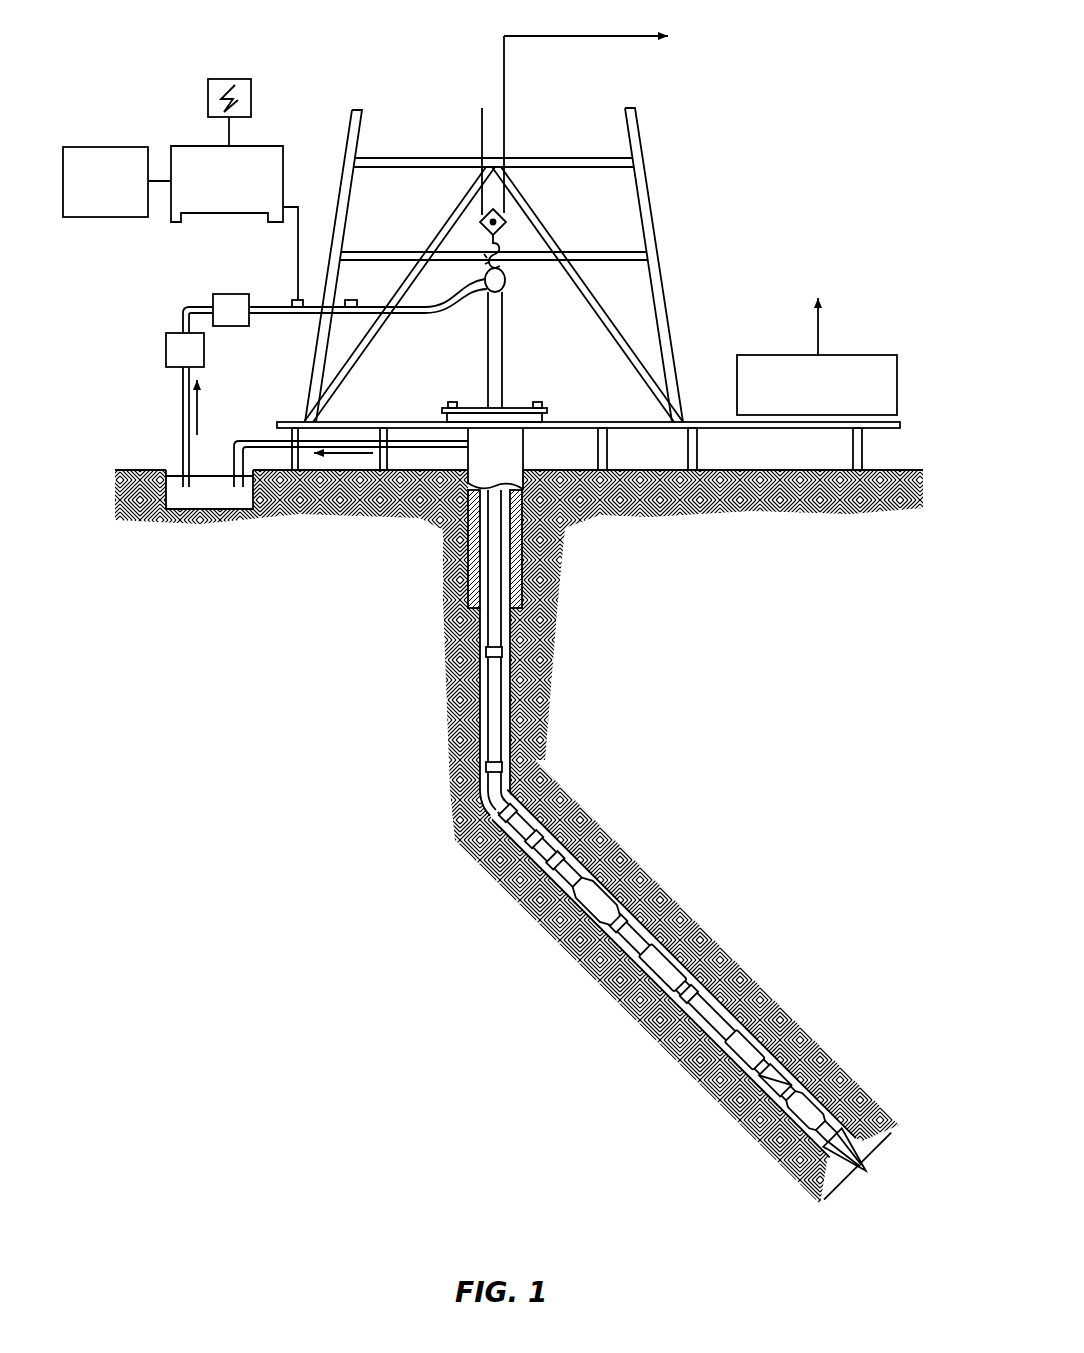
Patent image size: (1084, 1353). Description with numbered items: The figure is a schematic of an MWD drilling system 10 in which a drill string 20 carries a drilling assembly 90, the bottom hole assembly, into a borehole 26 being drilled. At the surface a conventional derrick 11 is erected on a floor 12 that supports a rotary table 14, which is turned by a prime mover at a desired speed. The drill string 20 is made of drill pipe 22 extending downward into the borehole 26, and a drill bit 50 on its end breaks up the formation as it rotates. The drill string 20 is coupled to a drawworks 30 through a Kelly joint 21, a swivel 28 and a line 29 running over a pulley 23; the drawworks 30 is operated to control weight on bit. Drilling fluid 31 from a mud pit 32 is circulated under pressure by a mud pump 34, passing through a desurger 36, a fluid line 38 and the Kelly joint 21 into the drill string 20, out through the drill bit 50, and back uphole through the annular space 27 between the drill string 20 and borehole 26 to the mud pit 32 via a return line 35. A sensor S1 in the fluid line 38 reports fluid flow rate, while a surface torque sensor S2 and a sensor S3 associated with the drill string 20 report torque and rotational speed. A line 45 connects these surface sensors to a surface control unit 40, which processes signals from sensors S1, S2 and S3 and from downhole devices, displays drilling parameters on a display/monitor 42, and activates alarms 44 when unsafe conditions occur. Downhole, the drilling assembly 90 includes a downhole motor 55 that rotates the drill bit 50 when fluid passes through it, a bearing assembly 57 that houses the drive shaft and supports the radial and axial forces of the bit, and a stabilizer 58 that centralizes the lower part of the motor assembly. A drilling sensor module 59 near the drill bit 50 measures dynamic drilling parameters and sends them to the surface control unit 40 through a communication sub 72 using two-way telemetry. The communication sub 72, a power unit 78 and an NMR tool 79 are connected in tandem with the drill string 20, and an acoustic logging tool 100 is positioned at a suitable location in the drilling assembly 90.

The MWD drilling system 10 is at (420, 43).
The derrick 11 is at (670, 268).
The floor 12 is at (686, 416).
The rotary table 14 is at (508, 404).
The drill string 20 is at (504, 705).
The Kelly joint 21 is at (503, 328).
The drill pipe 22 is at (471, 683).
The pulley 23 is at (500, 221).
The borehole 26 is at (518, 792).
The annular space 27 is at (537, 828).
The swivel 28 is at (486, 292).
The line 29 is at (506, 125).
The drawworks 30 is at (858, 355).
The drilling fluid 31 is at (176, 478).
The mud pit 32 is at (197, 508).
The mud pump 34 is at (180, 333).
The return line 35 is at (433, 448).
The desurger 36 is at (232, 294).
The fluid line 38 is at (181, 395).
The surface control unit 40 is at (208, 146).
The display/monitor 42 is at (229, 79).
The alarms 44 is at (113, 219).
The sensor line 45 is at (284, 207).
The sensor S1 is at (350, 300).
The surface torque sensor S2 is at (537, 402).
The sensor S3 is at (452, 402).
The drill bit 50 is at (853, 1127).
The downhole motor 55 is at (704, 984).
The bearing assembly 57 is at (830, 1082).
The stabilizer 58 is at (823, 1108).
The drilling sensor module 59 is at (790, 1150).
The communication sub 72 is at (485, 800).
The power unit 78 is at (505, 836).
The NMR tool 79 is at (583, 921).
The drilling assembly 90 is at (728, 879).
The acoustic logging tool 100 is at (822, 1087).